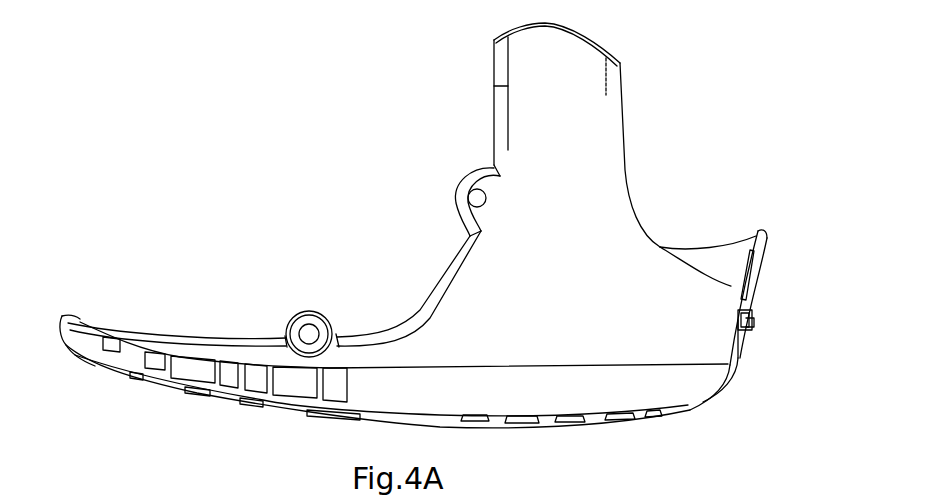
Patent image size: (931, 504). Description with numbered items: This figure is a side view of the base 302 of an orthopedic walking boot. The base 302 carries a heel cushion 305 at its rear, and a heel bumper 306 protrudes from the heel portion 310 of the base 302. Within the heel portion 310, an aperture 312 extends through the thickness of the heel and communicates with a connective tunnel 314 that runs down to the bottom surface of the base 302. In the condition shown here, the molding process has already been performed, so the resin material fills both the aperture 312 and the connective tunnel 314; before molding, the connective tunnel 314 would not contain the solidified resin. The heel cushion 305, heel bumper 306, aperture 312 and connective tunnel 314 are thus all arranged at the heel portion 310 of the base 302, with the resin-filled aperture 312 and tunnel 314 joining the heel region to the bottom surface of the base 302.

The base 302 is at (602, 118).
The heel cushion 305 is at (757, 233).
The heel bumper 306 is at (749, 323).
The heel portion 310 is at (716, 410).
The aperture 312 is at (741, 328).
The connective tunnel 314 is at (739, 298).